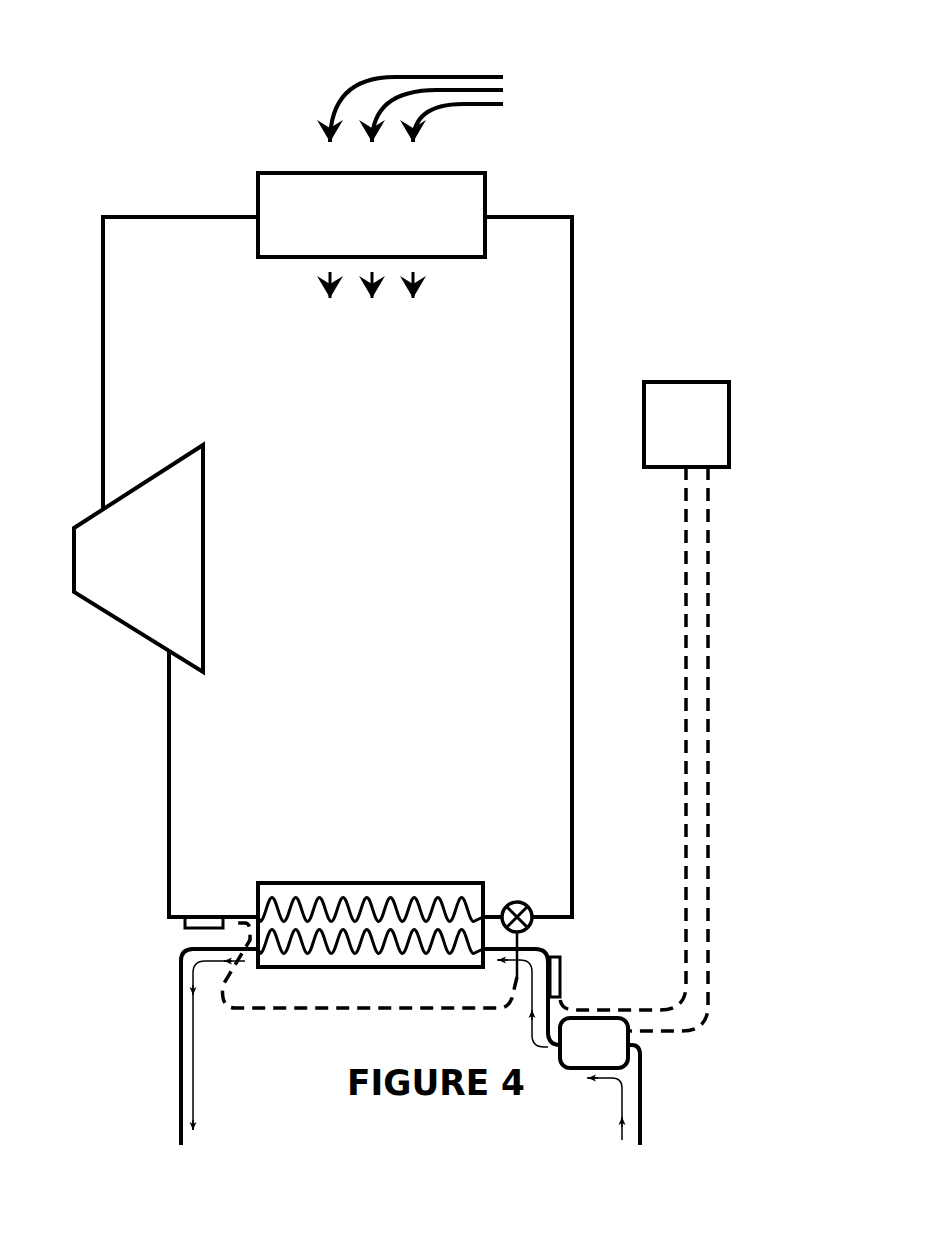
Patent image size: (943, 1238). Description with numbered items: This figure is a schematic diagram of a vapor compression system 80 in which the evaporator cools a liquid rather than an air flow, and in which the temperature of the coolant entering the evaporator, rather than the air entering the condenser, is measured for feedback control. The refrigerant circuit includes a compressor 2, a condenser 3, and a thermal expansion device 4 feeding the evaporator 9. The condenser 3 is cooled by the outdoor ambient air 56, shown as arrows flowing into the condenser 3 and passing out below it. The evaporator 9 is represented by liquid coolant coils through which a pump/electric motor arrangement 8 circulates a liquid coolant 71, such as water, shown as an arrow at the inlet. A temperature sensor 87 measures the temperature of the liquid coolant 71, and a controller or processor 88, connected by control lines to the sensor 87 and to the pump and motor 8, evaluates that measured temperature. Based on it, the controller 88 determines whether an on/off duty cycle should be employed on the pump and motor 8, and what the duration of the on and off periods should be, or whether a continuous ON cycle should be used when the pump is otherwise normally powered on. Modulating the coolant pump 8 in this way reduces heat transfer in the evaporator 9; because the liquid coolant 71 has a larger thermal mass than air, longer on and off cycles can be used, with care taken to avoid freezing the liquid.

The water heating system 80 is at (310, 459).
The outdoor ambient air 56 is at (499, 62).
The condenser 3 is at (457, 232).
The compressor 2 is at (176, 522).
The controller or processor 88 is at (736, 425).
The evaporator 9 is at (438, 869).
The thermal expansion device 4 is at (543, 928).
The pump/electric motor arrangement 8 is at (210, 913).
The temperature sensor 87 is at (564, 982).
The liquid coolant 71 is at (598, 1087).